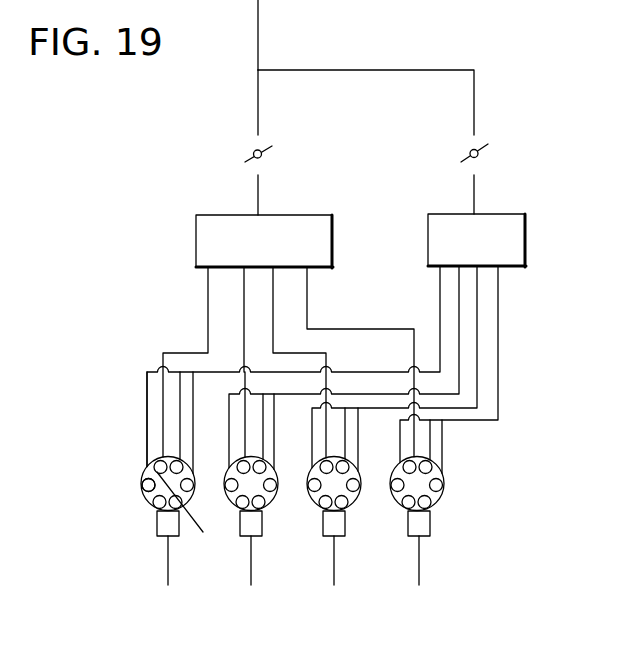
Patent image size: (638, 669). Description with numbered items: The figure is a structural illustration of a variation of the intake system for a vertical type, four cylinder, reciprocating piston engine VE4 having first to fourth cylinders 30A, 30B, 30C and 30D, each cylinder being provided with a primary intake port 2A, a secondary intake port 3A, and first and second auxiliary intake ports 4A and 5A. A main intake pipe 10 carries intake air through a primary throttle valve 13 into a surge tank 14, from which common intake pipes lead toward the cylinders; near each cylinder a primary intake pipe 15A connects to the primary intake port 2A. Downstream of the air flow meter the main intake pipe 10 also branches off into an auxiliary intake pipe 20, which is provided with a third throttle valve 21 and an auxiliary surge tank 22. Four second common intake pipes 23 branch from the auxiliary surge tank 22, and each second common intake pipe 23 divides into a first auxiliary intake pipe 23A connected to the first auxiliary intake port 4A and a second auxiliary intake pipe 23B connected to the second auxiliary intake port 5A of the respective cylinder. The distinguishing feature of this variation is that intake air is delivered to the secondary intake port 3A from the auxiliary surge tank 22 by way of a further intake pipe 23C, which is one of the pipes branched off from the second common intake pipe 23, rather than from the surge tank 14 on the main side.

The main intake pipe 10 is at (258, 29).
The auxiliary intake pipe 20 is at (394, 70).
The primary throttle valve 13 is at (247, 160).
The third throttle valve 21 is at (482, 145).
The surge tank 14 is at (196, 236).
The auxiliary surge tank 22 is at (525, 241).
The primary intake pipe 15A is at (208, 287).
The second common intake pipe 23 is at (431, 297).
The first auxiliary intake pipe 23A is at (147, 384).
The second auxiliary intake pipe 23B is at (193, 432).
The intake pipe 23C is at (180, 402).
The primary intake port 2A is at (141, 472).
The first auxiliary intake port 4A is at (146, 481).
The secondary intake port 3A is at (153, 512).
The second auxiliary intake port 5A is at (190, 516).
The V-4 engine VE4 is at (455, 485).
The first cylinder 30A is at (153, 545).
The second cylinder 30B is at (237, 545).
The third cylinder 30C is at (320, 545).
The fourth cylinder 30D is at (404, 545).